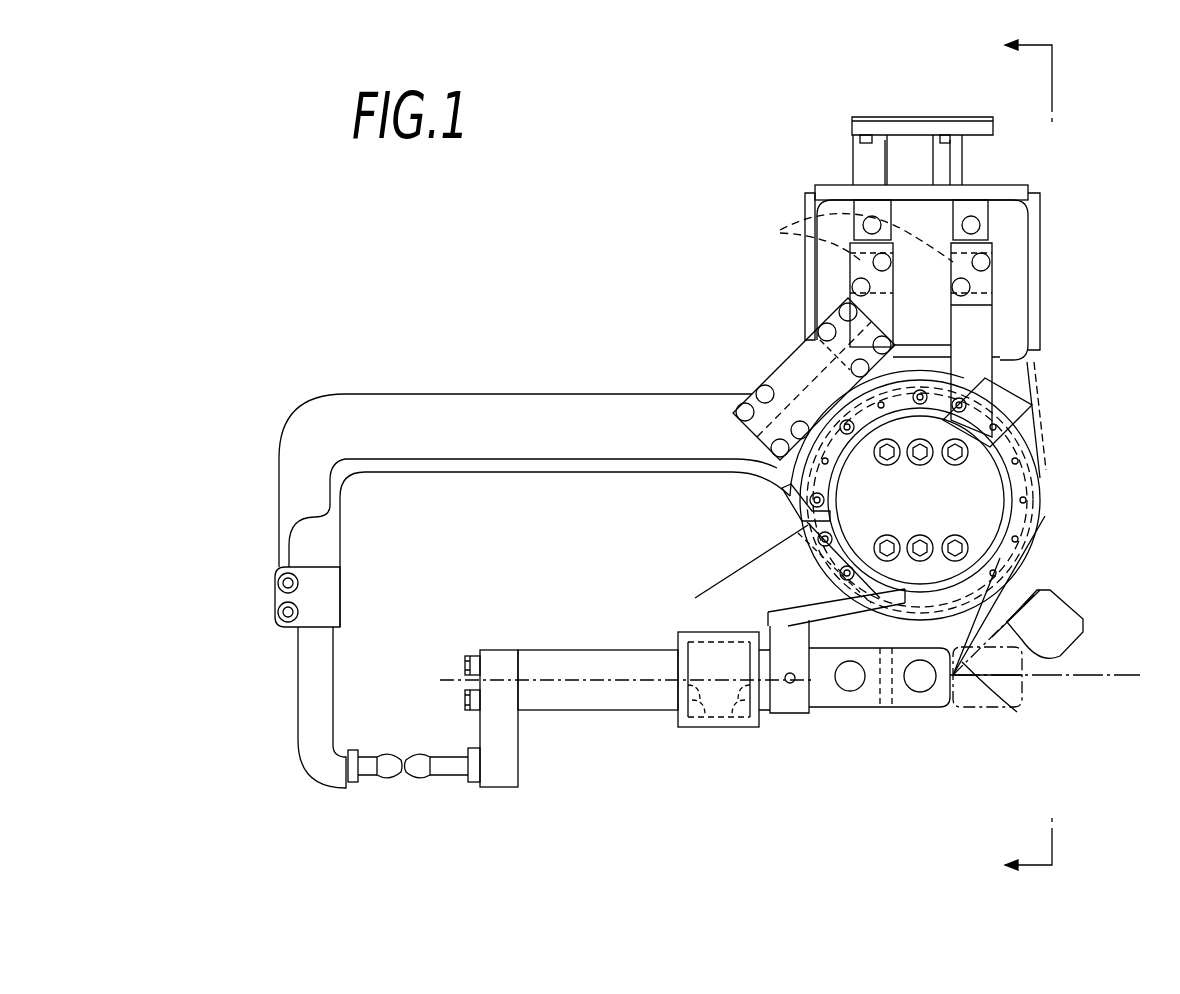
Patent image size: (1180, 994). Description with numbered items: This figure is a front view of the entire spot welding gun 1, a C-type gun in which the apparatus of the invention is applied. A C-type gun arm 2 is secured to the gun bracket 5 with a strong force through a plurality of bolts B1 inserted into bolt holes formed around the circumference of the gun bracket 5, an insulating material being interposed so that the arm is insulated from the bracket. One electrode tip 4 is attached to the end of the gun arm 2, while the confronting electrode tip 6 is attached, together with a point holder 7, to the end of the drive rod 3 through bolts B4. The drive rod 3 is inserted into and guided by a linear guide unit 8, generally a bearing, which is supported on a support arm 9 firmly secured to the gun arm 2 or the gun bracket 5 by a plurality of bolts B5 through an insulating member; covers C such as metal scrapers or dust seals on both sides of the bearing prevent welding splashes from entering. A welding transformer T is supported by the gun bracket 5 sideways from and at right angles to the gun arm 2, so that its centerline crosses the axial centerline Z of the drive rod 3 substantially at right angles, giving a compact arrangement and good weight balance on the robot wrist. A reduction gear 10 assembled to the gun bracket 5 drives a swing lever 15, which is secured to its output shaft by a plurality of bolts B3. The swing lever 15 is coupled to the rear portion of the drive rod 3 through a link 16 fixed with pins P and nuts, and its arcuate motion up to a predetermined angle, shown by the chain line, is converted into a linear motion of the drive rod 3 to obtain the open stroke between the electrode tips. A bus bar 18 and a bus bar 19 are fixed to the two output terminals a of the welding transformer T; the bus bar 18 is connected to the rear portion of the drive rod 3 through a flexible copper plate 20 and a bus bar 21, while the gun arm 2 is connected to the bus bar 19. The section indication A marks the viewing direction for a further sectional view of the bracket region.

The spot welding gun 1 is at (613, 384).
The C-type gun arm 2 is at (535, 410).
The drive rod 3 is at (565, 652).
The electrode tip 4 is at (383, 775).
The gun bracket 5 is at (900, 125).
The electrode tip 6 is at (415, 775).
The point holder 7 is at (503, 780).
The linear guide unit 8 is at (715, 700).
The support arm 9 is at (703, 632).
The reduction gear 10 is at (968, 487).
The swing lever 15 is at (1033, 660).
The link 16 is at (890, 710).
The bus bar 18 is at (985, 325).
The bus bar 19 is at (805, 352).
The flexible copper plate 20 is at (803, 606).
The bus bar 21 is at (790, 692).
The output terminals a is at (800, 228).
The section line A is at (1016, 457).
The bolts B1 is at (840, 380).
The bolts B3 is at (925, 542).
The bolts B4 is at (470, 690).
The bolts B5 is at (807, 523).
The covers C is at (700, 725).
The pins P is at (848, 692).
The welding transformer T is at (1015, 240).
The axial centerline of the drive rod Z is at (1097, 672).